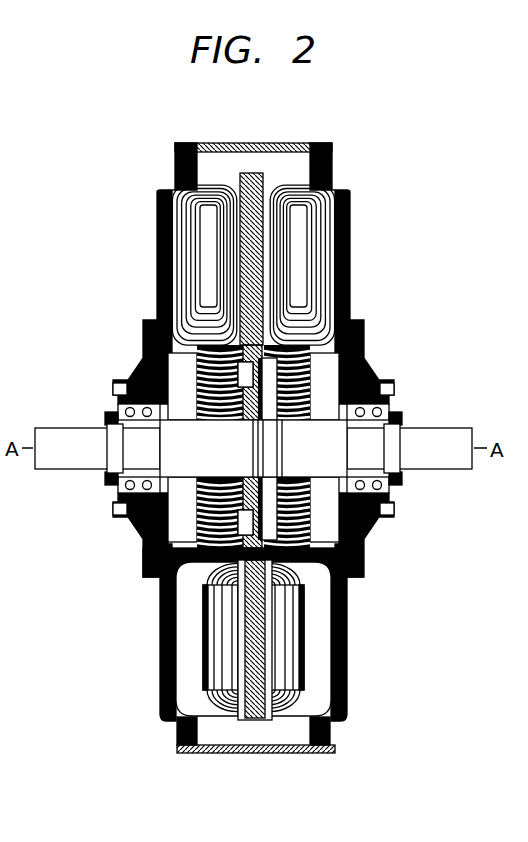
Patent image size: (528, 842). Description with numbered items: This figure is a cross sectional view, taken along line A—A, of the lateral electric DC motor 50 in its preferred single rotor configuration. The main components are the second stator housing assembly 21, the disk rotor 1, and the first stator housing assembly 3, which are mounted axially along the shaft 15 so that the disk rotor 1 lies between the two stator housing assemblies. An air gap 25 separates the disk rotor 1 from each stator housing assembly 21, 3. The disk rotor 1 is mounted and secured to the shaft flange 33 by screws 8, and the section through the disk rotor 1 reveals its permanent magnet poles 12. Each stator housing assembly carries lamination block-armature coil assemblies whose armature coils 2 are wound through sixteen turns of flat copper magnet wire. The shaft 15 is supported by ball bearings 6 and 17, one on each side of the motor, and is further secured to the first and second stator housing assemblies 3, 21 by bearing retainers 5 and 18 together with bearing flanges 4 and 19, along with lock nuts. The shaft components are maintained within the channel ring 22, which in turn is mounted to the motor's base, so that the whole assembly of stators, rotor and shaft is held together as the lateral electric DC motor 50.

The disk rotor 1 is at (257, 166).
The armature coil 2 is at (347, 707).
The first stator housing assembly 3 is at (353, 232).
The bearing flange 4 is at (360, 337).
The bearing retainer 5 is at (390, 395).
The ball bearing 6 is at (397, 405).
The screws 8 is at (245, 525).
The permanent magnet poles 12 is at (273, 652).
The shaft 15 is at (440, 440).
The ball bearing 17 is at (113, 410).
The bearing retainer 18 is at (118, 512).
The bearing flange 19 is at (143, 332).
The second stator housing assembly 21 is at (140, 232).
The channel ring 22 is at (222, 143).
The air gap 25 is at (232, 185).
The shaft flange 33 is at (267, 363).
The lateral electric DC motor 50 is at (425, 226).